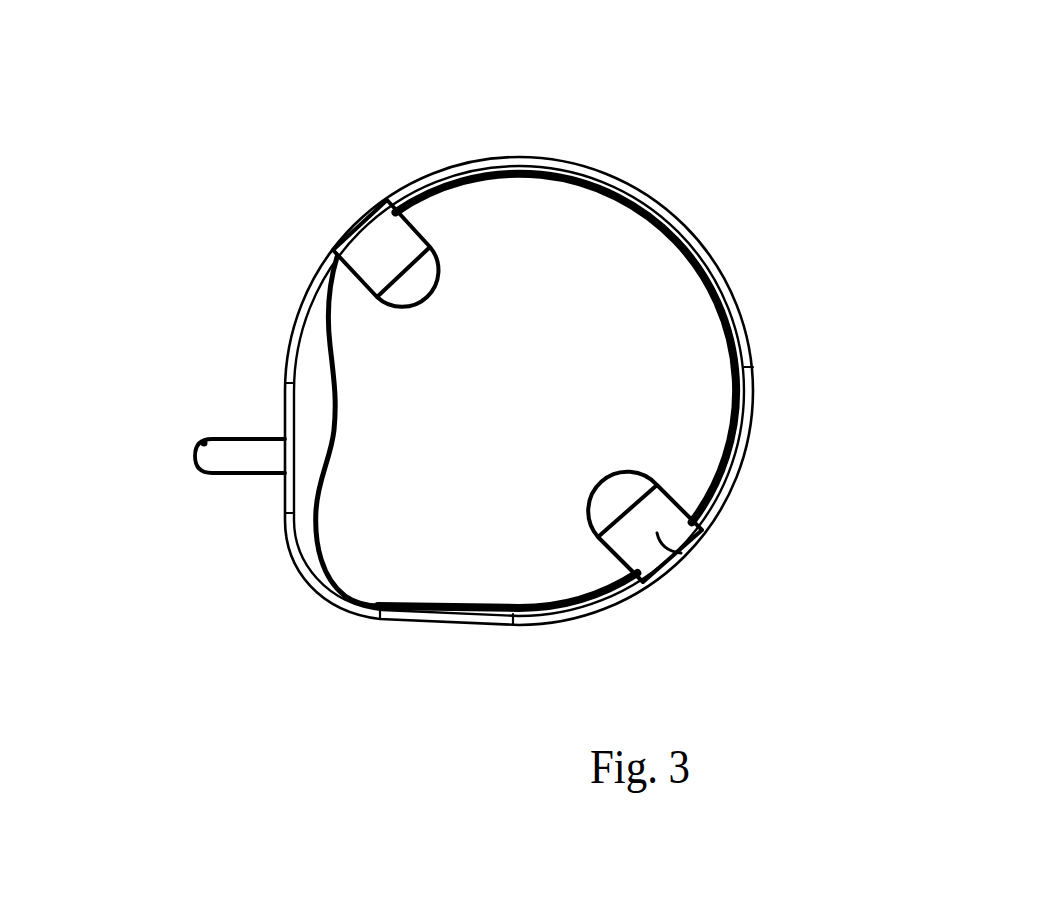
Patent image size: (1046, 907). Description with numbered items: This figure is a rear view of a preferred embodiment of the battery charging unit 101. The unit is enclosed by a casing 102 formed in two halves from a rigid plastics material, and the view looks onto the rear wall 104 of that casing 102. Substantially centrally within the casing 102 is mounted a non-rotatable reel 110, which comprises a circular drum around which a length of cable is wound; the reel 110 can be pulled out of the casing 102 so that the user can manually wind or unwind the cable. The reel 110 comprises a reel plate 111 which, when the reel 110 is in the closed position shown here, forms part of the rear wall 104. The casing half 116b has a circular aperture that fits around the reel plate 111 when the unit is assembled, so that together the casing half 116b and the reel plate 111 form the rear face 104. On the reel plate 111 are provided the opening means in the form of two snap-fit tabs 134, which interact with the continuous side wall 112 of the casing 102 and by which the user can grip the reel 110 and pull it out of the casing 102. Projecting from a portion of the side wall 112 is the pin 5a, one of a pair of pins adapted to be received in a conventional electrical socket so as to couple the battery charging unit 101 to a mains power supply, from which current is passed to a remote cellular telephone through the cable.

The casing 102 is at (470, 157).
The rear wall 104 is at (617, 190).
The reel 110 is at (617, 287).
The reel plate 111 is at (643, 325).
The side wall 112 is at (745, 432).
The casing half 116b is at (747, 367).
The snap-fit tabs 134 is at (370, 250).
The pin 5a is at (204, 443).
The battery charging unit 101 is at (146, 750).